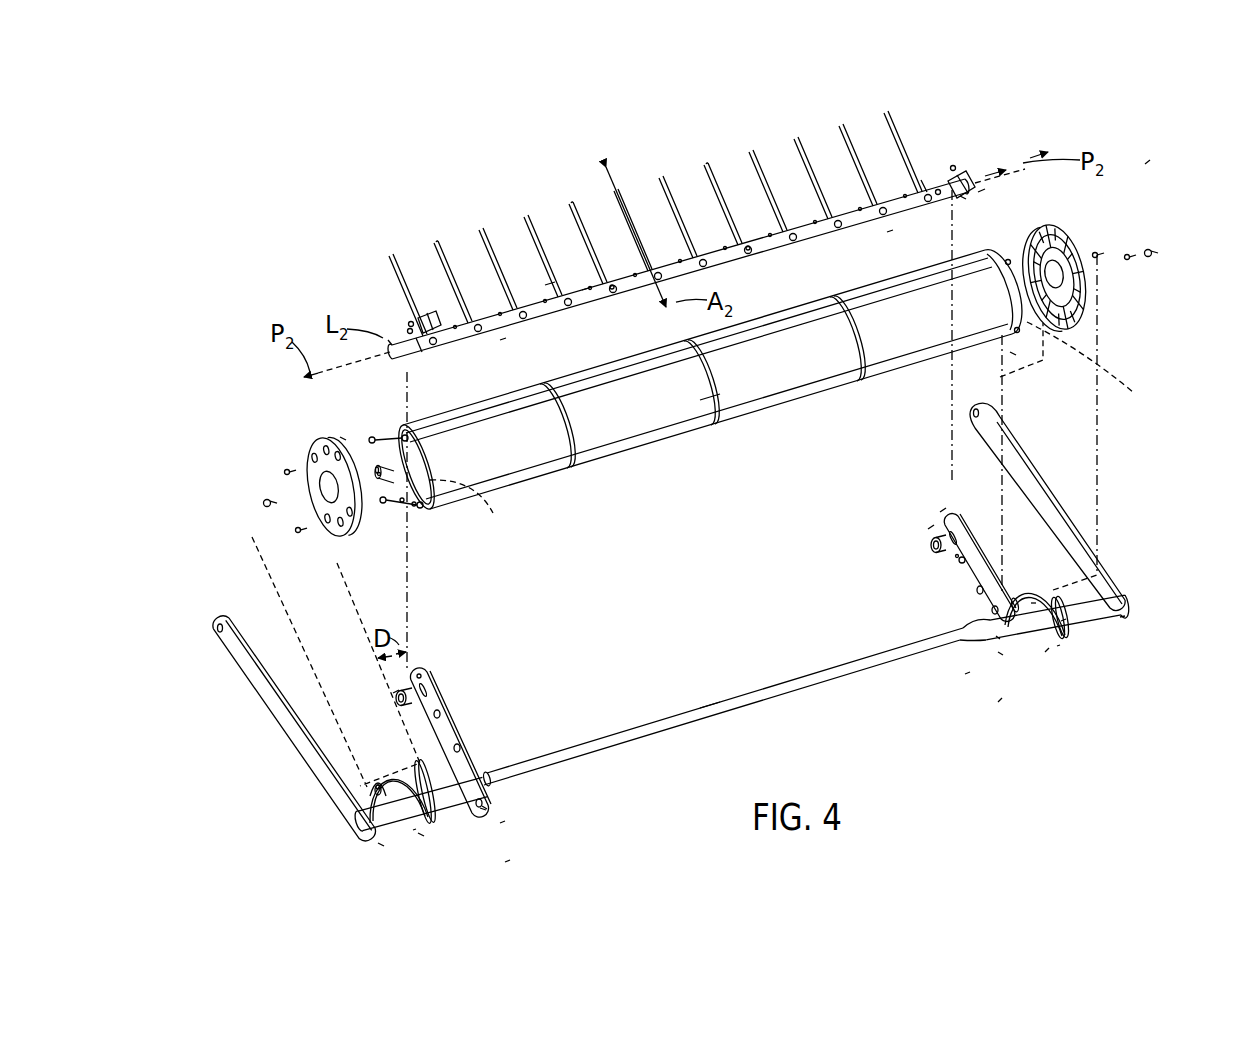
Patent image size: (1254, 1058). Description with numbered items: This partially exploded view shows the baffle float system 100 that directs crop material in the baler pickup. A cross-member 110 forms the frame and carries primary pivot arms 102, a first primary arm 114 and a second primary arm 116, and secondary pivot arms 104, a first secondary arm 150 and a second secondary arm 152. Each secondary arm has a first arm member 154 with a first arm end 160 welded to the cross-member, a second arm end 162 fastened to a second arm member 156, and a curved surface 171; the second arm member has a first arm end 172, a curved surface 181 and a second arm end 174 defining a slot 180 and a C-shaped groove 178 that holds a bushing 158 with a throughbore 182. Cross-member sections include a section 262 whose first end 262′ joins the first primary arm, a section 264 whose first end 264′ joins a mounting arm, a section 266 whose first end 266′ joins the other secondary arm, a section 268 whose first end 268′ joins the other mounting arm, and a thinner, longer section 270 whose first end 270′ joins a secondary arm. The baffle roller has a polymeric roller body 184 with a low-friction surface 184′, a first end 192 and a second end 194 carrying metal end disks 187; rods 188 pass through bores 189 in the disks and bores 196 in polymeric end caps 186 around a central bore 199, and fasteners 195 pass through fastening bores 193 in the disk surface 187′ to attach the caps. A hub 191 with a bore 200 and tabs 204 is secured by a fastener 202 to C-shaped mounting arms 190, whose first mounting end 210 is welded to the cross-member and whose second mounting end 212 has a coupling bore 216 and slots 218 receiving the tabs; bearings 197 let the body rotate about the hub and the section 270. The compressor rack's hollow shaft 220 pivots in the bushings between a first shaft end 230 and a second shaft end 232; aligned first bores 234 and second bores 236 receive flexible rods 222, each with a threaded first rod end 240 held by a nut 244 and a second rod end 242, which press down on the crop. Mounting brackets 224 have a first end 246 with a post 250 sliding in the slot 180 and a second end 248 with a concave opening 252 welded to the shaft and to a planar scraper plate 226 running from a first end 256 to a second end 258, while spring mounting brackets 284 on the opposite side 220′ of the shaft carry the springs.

The baffle float system 100 is at (1147, 162).
The primary pivot arms 102 is at (1093, 535).
The secondary pivot arms 104 is at (1000, 700).
The cross-member 110 is at (1047, 650).
The first primary arm 114 is at (302, 771).
The second primary arm 116 is at (1055, 482).
The first secondary arm 150 is at (503, 823).
The second secondary arm 152 is at (431, 662).
The first arm member 154 is at (478, 760).
The second arm member 156 is at (940, 510).
The bushing 158 is at (392, 691).
The first arm end 160 is at (484, 808).
The second arm end 162 is at (440, 716).
The surface 171 is at (440, 730).
The first arm end 172 is at (973, 584).
The second arm end 174 is at (927, 527).
The C-shaped groove 178 is at (421, 677).
The slot 180 is at (428, 694).
The surface 181 is at (956, 557).
The throughbore 182 is at (396, 698).
The roller body 184 is at (912, 268).
The surface 184′ is at (808, 400).
The end caps 186 is at (312, 548).
The end disks 187 is at (343, 432).
The surface 187′ is at (415, 530).
The rods 188 is at (800, 323).
The bores 189 is at (371, 438).
The mounting arms 190 is at (413, 832).
The central hub 191 is at (376, 468).
The first end 192 is at (402, 500).
The fastening bores 193 is at (414, 504).
The second end 194 is at (1012, 328).
The mechanical fasteners 195 is at (286, 472).
The bores 196 is at (350, 523).
The bearings 197 is at (800, 434).
The central bore 199 is at (327, 488).
The bore 200 is at (377, 474).
The mechanical fastener 202 is at (266, 503).
The tabs 204 is at (393, 472).
The first mounting end 210 is at (428, 790).
The second mounting end 212 is at (382, 757).
The coupling bore 216 is at (378, 789).
The slots 218 is at (375, 785).
The shaft 220 is at (933, 162).
The side of the shaft 220′ is at (548, 280).
The flexible rods 222 is at (738, 148).
The mounting brackets 224 is at (427, 303).
The scraper plate 226 is at (983, 190).
The first shaft end 230 is at (390, 343).
The second shaft end 232 is at (960, 170).
The first bores 234 is at (752, 251).
The second bores 236 is at (642, 250).
The first rod end 240 is at (750, 250).
The second rod end 242 is at (570, 200).
The nut 244 is at (660, 300).
The first end 246 is at (410, 323).
The second end 248 is at (410, 330).
The post 250 is at (427, 312).
The concave opening 252 is at (418, 343).
The first end 256 is at (387, 357).
The second end 258 is at (963, 197).
The section 262 is at (397, 835).
The first end 262′ is at (380, 845).
The section 264 is at (508, 862).
The first end 264′ is at (422, 825).
The section 266 is at (1070, 658).
The first end 266′ is at (1000, 653).
The section 268 is at (1094, 629).
The first end 268′ is at (1063, 620).
The section 270 is at (762, 708).
The first end 270′ is at (483, 785).
The spring mounting brackets 284 is at (500, 340).